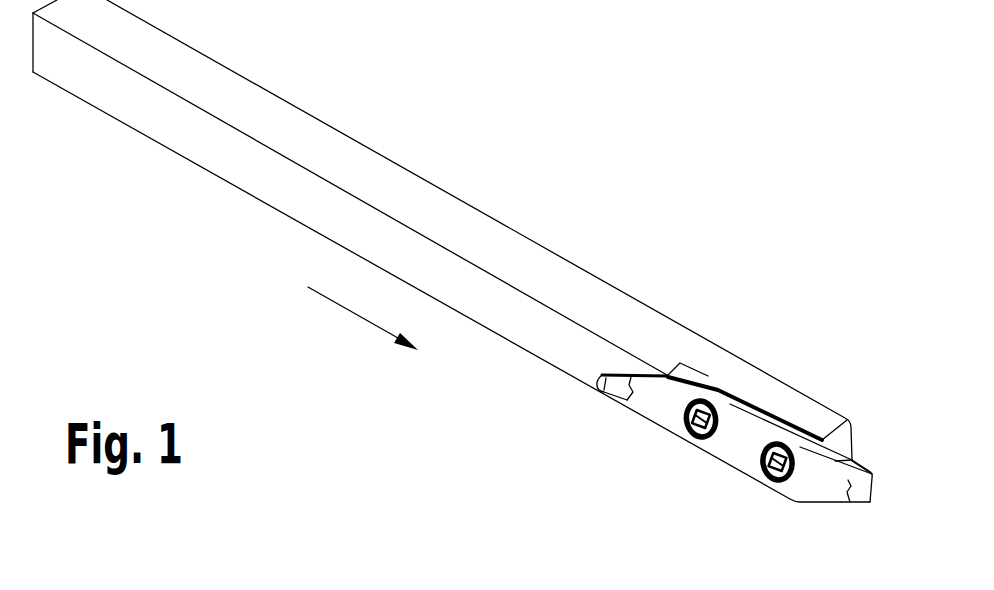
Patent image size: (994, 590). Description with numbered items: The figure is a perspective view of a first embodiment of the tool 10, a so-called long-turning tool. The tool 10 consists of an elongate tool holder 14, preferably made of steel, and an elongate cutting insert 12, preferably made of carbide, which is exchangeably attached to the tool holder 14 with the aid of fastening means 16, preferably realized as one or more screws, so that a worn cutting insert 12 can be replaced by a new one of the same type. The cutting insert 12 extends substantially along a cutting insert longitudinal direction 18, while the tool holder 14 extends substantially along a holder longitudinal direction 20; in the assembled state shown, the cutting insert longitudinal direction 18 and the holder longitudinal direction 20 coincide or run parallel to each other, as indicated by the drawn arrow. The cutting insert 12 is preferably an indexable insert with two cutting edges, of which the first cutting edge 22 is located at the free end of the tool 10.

The tool 10 is at (475, 292).
The cutting insert 12 is at (722, 464).
The tool holder 14 is at (583, 246).
The fastening means 16 is at (687, 422).
The cutting insert longitudinal direction 18 is at (363, 357).
The holder longitudinal direction 20 is at (352, 313).
The first cutting edge 22 is at (873, 478).